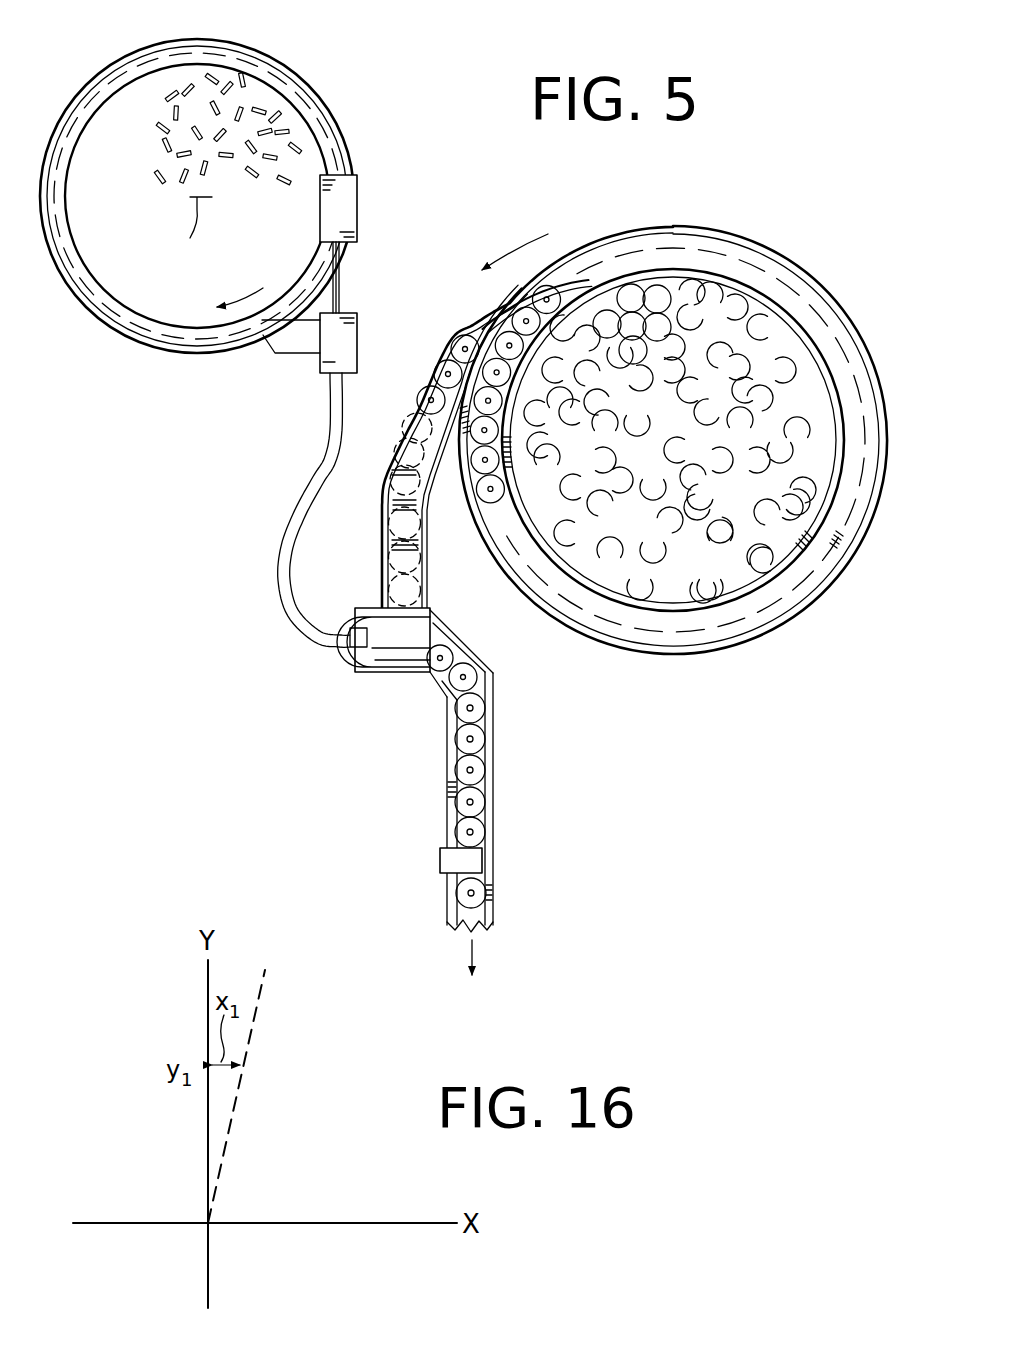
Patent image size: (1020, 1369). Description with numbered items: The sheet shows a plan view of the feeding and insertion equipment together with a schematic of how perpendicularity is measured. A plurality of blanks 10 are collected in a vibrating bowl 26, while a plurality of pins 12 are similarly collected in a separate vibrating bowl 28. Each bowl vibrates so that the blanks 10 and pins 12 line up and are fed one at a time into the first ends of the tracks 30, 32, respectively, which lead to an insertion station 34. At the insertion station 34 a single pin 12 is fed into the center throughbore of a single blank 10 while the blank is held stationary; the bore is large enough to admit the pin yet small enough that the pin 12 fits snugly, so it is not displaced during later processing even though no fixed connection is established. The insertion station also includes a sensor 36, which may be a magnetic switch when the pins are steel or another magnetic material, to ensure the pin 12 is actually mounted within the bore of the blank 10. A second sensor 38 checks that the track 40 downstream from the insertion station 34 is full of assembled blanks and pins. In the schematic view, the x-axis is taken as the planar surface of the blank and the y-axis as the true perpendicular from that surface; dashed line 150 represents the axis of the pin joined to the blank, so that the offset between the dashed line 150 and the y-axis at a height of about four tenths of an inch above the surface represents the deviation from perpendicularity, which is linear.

In FIG. 5, the blank 10 is at (662, 285).
In FIG. 5, the pin 12 is at (263, 95).
In FIG. 5, the vibrating bowl 26 is at (843, 567).
In FIG. 5, the vibrating bowl 28 is at (343, 136).
In FIG. 5, the track 30 is at (423, 512).
In FIG. 5, the track 32 is at (323, 478).
In FIG. 5, the insertion station 34 is at (357, 657).
In FIG. 5, the sensor 36 is at (430, 645).
In FIG. 5, the second sensor 38 is at (440, 860).
In FIG. 5, the track 40 is at (490, 772).
In FIG. 16, the dashed line 150 is at (253, 1040).